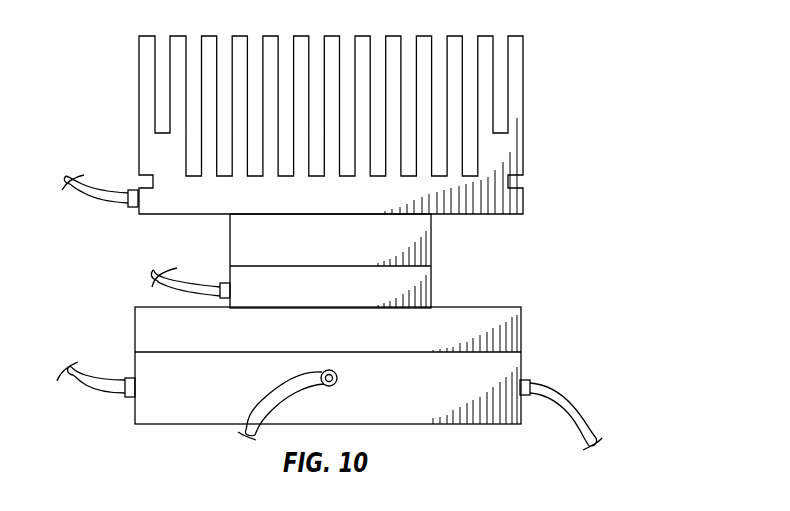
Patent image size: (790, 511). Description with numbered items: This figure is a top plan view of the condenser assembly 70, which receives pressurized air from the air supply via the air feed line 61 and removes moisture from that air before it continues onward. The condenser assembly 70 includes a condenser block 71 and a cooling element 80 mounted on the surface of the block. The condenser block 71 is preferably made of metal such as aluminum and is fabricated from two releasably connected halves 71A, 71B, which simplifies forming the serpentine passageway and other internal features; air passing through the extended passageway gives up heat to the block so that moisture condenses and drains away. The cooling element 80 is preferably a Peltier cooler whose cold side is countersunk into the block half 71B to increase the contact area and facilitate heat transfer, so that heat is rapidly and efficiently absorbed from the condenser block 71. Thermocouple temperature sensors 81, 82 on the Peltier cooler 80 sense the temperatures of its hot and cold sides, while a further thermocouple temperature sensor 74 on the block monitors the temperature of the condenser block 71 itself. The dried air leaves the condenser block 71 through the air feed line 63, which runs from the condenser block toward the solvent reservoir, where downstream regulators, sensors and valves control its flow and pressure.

The cooling element 80 is at (507, 143).
The thermocouple temperature sensor 81 is at (133, 189).
The thermocouple temperature sensor 82 is at (229, 283).
The condenser assembly 70 is at (548, 250).
The condenser block 71 is at (186, 400).
The block half 71A is at (430, 406).
The block half 71B is at (467, 318).
The thermocouple temperature sensor 74 is at (337, 378).
The air feed line 63 is at (98, 396).
The air feed line 61 is at (567, 430).